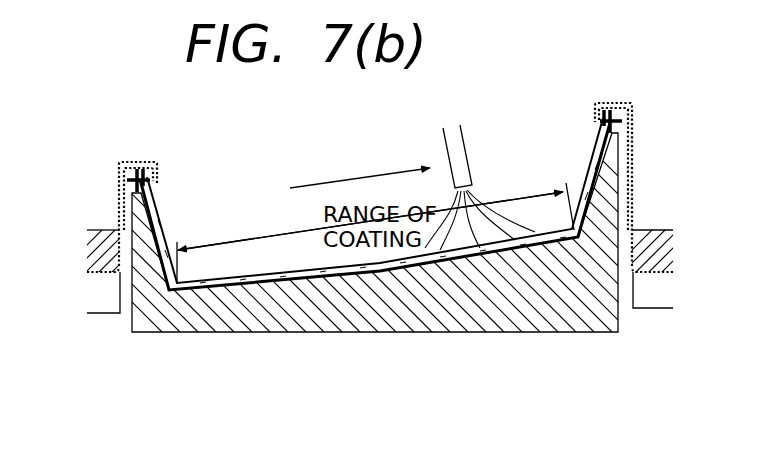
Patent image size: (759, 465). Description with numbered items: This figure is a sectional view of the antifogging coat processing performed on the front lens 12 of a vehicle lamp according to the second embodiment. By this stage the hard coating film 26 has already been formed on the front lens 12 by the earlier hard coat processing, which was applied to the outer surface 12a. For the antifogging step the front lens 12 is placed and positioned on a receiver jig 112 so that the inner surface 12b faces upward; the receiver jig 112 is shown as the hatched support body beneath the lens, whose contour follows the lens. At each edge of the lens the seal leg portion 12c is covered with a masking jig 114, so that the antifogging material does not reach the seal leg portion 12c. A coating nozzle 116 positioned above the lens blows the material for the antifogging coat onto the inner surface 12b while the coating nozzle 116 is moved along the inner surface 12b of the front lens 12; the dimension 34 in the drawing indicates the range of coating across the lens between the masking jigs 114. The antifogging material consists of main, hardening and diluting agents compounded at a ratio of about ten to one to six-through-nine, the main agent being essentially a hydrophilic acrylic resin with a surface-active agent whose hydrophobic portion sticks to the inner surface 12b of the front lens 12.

The front lens 12 is at (374, 222).
The outer surface 12a is at (423, 265).
The inner surface 12b is at (543, 227).
The seal leg portion 12c is at (155, 178).
The hard coating film 26 is at (350, 277).
The range of coating 34 is at (250, 277).
The receiver jig 112 is at (513, 317).
The masking jig 114 is at (119, 195).
The coating nozzle 116 is at (447, 143).